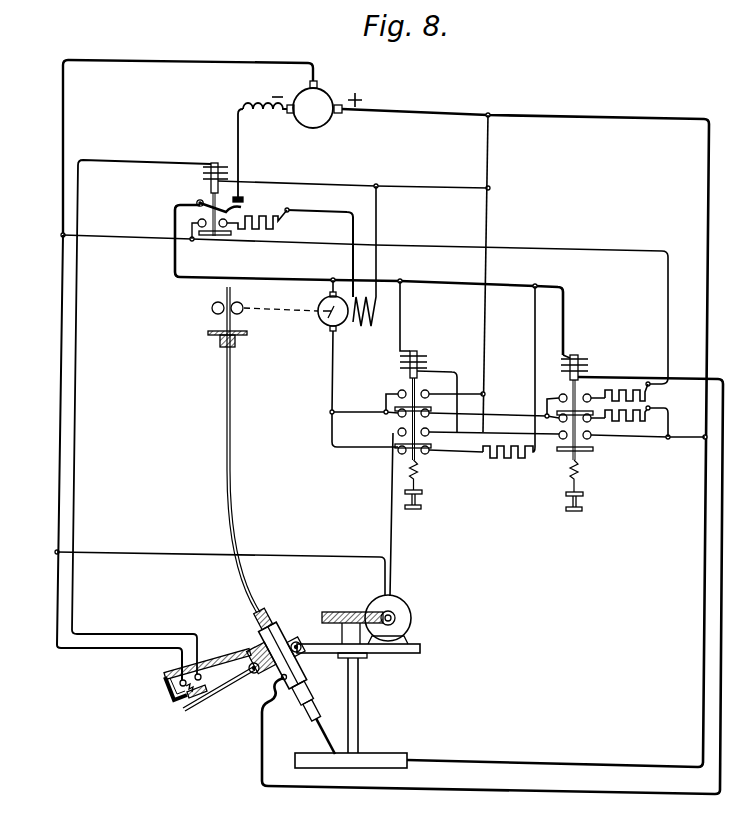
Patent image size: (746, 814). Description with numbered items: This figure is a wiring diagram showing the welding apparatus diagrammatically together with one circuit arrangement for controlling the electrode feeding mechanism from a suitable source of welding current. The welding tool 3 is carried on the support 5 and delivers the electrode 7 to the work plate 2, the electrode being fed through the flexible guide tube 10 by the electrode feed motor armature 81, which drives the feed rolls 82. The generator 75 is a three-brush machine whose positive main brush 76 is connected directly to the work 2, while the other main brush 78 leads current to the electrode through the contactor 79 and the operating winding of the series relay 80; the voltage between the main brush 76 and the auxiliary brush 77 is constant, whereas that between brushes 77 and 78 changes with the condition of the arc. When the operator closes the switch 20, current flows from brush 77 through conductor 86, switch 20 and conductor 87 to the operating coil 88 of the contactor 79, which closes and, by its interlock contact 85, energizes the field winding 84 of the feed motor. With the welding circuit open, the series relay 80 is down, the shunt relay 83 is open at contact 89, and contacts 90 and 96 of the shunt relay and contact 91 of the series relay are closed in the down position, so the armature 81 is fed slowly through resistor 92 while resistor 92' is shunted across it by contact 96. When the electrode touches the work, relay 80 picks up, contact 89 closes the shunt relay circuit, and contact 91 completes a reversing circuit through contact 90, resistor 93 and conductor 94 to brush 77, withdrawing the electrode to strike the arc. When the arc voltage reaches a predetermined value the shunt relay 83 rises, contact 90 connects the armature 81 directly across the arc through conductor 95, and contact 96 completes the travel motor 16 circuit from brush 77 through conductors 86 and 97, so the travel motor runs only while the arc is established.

The plate 2 is at (391, 757).
The welding tool 3 is at (286, 631).
The support 5 is at (358, 691).
The electrode 7 is at (226, 450).
The flexible guide tube 10 is at (254, 619).
The travel motor 16 is at (404, 612).
The switch 20 is at (192, 708).
The generator 75 is at (313, 108).
The main brush 76 is at (340, 115).
The auxiliary brush 77 is at (318, 85).
The main brush 78 is at (288, 114).
The contactor 79 is at (215, 188).
The series relay 80 is at (577, 421).
The electrode feed motor armature 81 is at (345, 363).
The feed rolls 82 is at (225, 316).
The shunt relay 83 is at (428, 395).
The field winding 84 is at (363, 330).
The interlock contact 85 is at (232, 237).
The conductor 86 is at (57, 496).
The conductor 87 is at (74, 497).
The operating coil 88 is at (208, 178).
The contact 89 is at (593, 450).
The contact 90 is at (384, 398).
The contact 91 is at (550, 403).
The resistor 92 is at (636, 435).
The resistor 92' is at (509, 394).
The resistor 93 is at (609, 388).
The conductor 94 is at (611, 251).
The conductor 95 is at (487, 342).
The contact 96 is at (395, 433).
The conductor 97 is at (186, 556).